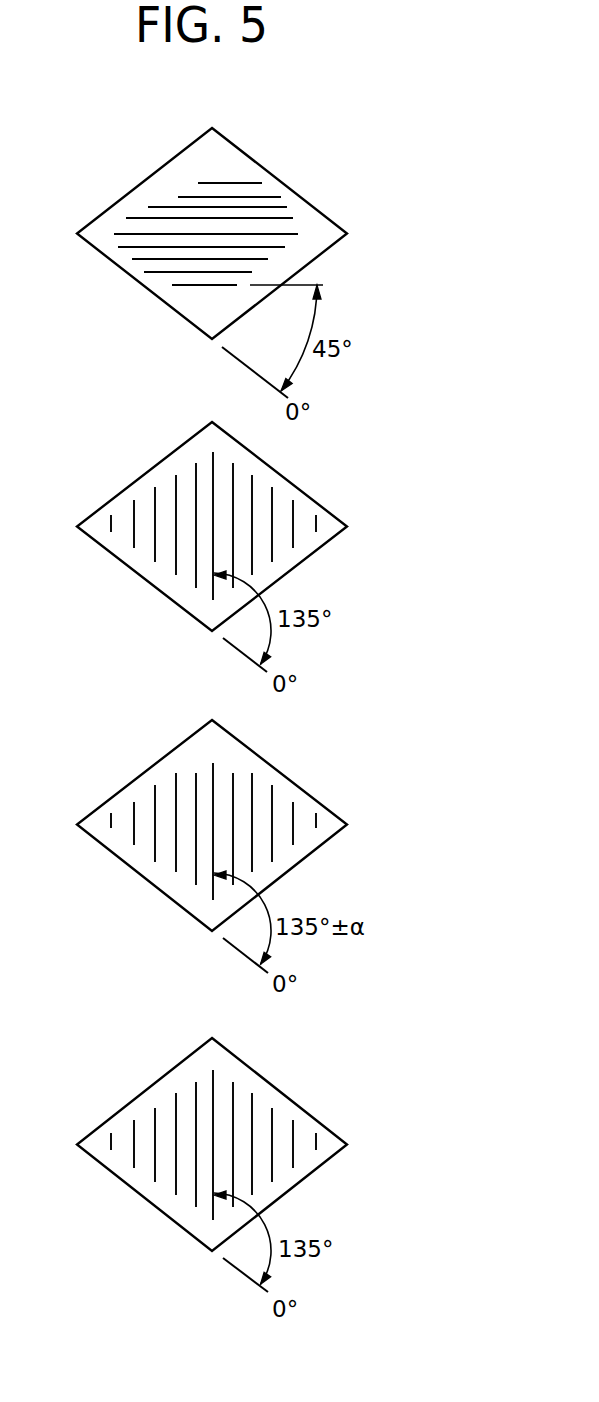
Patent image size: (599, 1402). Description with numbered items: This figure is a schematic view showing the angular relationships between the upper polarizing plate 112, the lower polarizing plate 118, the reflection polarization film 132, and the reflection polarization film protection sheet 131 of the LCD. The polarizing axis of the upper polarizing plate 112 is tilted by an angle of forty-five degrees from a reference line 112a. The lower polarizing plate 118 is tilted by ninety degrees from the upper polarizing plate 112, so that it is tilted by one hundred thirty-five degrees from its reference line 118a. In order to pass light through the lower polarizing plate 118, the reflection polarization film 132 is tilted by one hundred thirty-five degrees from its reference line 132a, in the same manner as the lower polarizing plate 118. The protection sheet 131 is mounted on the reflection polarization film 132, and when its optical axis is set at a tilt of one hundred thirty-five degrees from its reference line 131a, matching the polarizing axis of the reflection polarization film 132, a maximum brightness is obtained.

The upper polarizing plate 112 is at (275, 180).
The reference line 112a is at (238, 360).
The lower polarizing plate 118 is at (277, 473).
The reference line 118a is at (258, 666).
The protection sheet 131 is at (277, 772).
The reference line 131a is at (258, 966).
The reflection polarization film 132 is at (277, 1092).
The reference line 132a is at (258, 1286).